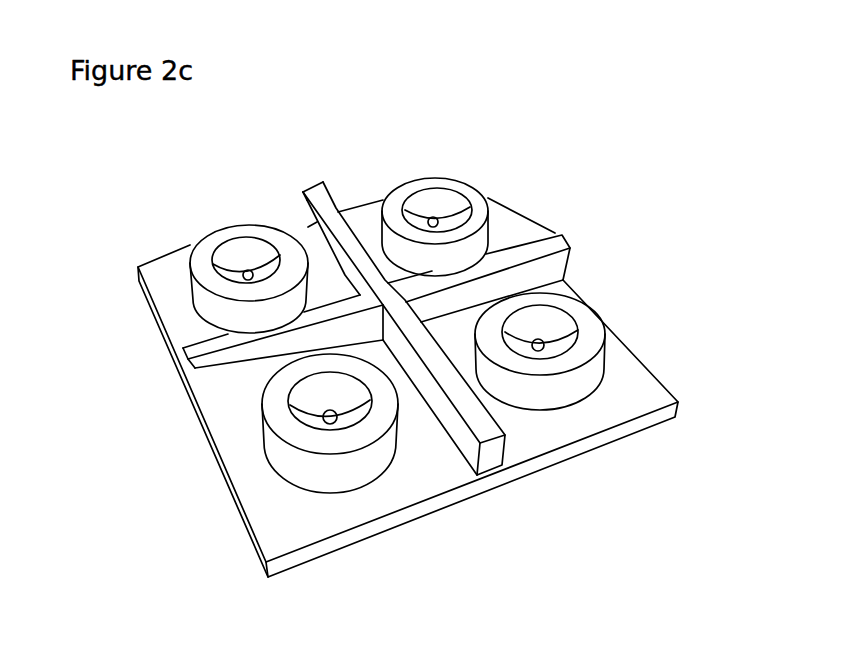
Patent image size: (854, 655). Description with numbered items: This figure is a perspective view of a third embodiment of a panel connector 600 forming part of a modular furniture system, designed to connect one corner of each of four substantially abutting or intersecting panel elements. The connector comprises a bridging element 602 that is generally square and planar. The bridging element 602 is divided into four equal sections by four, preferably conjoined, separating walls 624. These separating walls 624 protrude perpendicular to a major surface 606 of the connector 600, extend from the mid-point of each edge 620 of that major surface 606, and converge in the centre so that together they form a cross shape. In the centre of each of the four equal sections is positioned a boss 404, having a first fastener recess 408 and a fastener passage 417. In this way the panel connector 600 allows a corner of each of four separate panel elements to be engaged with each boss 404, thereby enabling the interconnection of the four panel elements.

The panel connector 600 is at (476, 140).
The bridging element 602 is at (449, 521).
The major surface 606 is at (647, 392).
The edge 620 is at (290, 224).
The separating wall 624 is at (544, 243).
The boss 404 is at (236, 224).
The first fastener recess 408 is at (467, 198).
The fastener passage 417 is at (441, 223).